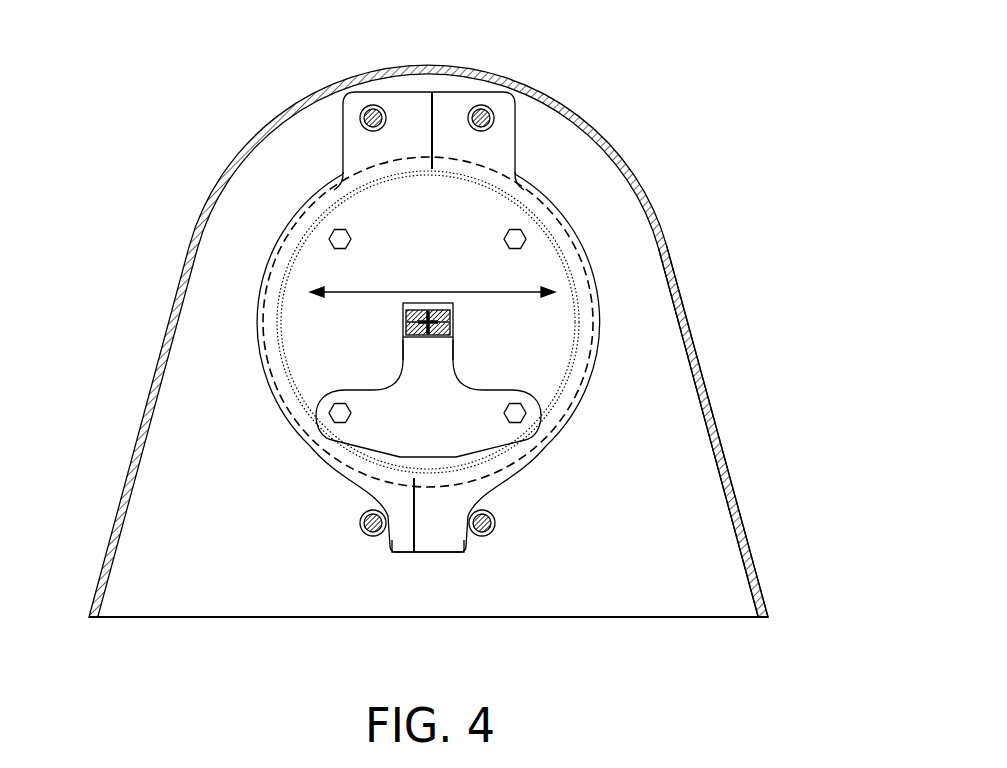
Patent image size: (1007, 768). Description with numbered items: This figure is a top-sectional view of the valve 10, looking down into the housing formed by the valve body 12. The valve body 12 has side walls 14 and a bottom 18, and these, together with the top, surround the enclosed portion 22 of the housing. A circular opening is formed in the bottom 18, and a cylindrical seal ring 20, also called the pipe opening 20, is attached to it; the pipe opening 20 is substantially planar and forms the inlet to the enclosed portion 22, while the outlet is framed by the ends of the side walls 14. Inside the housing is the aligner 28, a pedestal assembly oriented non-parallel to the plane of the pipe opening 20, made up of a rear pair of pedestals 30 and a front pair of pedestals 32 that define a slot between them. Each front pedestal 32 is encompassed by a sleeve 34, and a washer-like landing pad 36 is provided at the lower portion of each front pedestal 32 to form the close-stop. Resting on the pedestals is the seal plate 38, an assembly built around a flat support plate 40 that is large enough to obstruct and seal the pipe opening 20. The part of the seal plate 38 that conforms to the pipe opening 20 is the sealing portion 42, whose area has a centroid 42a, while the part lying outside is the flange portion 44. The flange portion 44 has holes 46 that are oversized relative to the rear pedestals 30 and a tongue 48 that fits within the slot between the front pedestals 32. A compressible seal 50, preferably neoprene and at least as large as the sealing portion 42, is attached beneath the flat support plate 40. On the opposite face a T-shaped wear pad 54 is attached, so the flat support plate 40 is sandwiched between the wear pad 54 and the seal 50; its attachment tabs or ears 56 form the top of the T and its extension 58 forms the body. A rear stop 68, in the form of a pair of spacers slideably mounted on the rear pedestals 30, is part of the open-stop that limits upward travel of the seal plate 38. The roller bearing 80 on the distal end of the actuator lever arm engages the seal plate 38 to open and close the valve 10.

The valve 10 is at (622, 80).
The valve body 12 is at (663, 332).
The side walls 14 is at (707, 360).
The bottom 18 is at (188, 406).
The seal ring 20 is at (563, 266).
The enclosed portion 22 is at (650, 444).
The aligner 28 is at (365, 103).
The rear pair of pedestals 30 is at (507, 105).
The front pair of pedestals 32 is at (510, 527).
The sleeve 34 is at (493, 515).
The landing pad 36 is at (361, 530).
The seal plate 38 is at (287, 449).
The flat support plate 40 is at (415, 238).
The sealing portion 42 is at (432, 292).
The centroid 42a is at (406, 321).
The flange portion 44 is at (433, 127).
The holes 46 is at (490, 130).
The tongue 48 is at (437, 528).
The seal 50 is at (575, 397).
The wear pad 54 is at (417, 433).
The attachment tabs or ears 56 is at (382, 407).
The extension 58 is at (427, 362).
The rear stop 68 is at (376, 107).
The roller bearing 80 is at (450, 311).